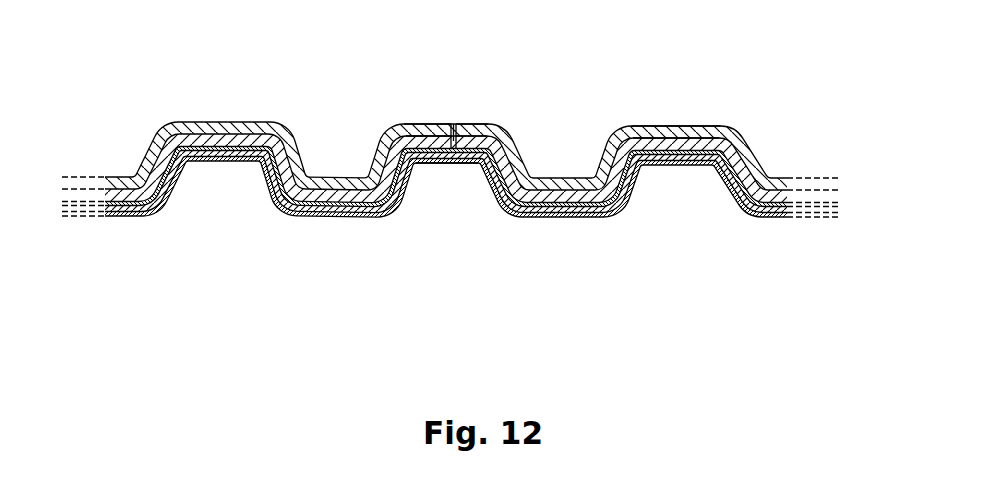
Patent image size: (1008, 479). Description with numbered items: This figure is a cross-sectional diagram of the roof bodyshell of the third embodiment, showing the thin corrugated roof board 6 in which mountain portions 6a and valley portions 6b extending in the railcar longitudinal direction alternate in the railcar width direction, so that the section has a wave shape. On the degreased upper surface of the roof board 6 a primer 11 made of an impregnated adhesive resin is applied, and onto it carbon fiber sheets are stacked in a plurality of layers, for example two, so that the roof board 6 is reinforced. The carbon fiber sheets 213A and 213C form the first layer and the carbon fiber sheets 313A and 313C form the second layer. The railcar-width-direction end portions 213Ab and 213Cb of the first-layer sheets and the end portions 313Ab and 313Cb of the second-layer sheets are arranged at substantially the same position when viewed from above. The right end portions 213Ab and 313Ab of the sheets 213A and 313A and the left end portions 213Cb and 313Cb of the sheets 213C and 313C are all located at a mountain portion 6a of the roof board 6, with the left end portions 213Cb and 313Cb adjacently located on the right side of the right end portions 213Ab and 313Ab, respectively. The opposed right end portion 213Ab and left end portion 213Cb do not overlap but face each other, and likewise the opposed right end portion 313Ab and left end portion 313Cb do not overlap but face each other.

The roof board 6 is at (312, 218).
The mountain portion 6a is at (453, 163).
The valley portion 6b is at (360, 218).
The primer 11 is at (563, 200).
The carbon fiber sheet 213A is at (208, 138).
The carbon fiber sheet 313A is at (238, 120).
The right end portion 213Ab is at (410, 140).
The right end portion 313Ab is at (442, 123).
The left end portion 213Cb is at (482, 135).
The left end portion 313Cb is at (467, 123).
The carbon fiber sheet 213C is at (698, 142).
The carbon fiber sheet 313C is at (658, 125).